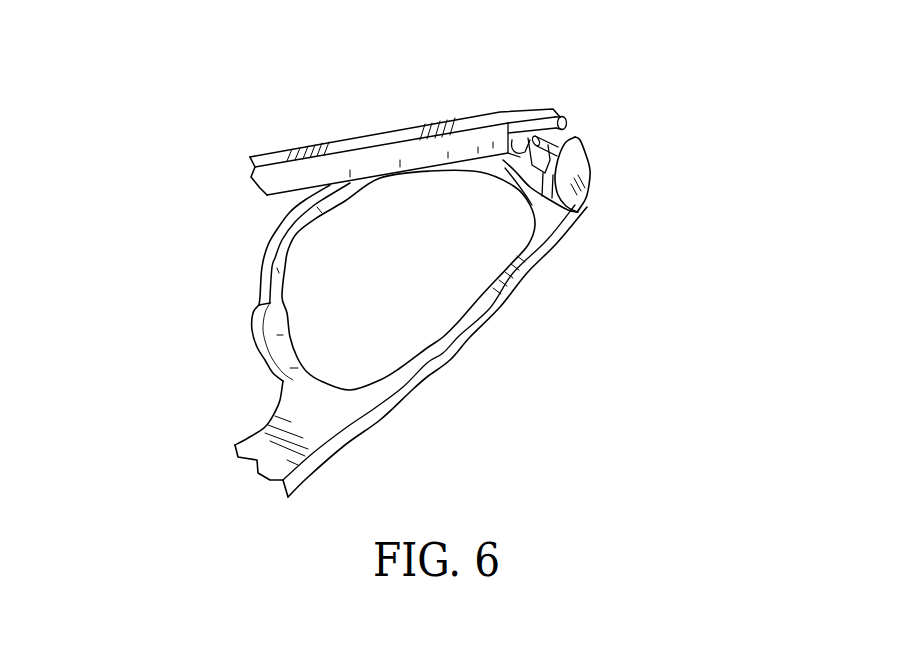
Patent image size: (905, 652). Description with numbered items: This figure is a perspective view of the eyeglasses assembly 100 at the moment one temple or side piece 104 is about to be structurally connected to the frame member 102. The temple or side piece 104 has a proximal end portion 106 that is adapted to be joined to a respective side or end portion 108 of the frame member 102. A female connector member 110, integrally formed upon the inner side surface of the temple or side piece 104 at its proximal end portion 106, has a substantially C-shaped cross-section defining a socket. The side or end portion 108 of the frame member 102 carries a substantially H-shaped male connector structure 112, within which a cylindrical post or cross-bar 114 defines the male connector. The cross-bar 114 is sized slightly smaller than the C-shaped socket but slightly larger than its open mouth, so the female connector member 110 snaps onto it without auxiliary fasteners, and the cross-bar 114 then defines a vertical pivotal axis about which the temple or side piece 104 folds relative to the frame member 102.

The eyeglasses assembly 100 is at (612, 147).
The frame member 102 is at (557, 230).
The temple or side piece 104 is at (463, 127).
The proximal end portion 106 is at (531, 105).
The side or end portion 108 is at (584, 211).
The female connector member 110 is at (512, 168).
The H-shaped male connector structure 112 is at (576, 165).
The cylindrical post or cross-bar 114 is at (566, 136).